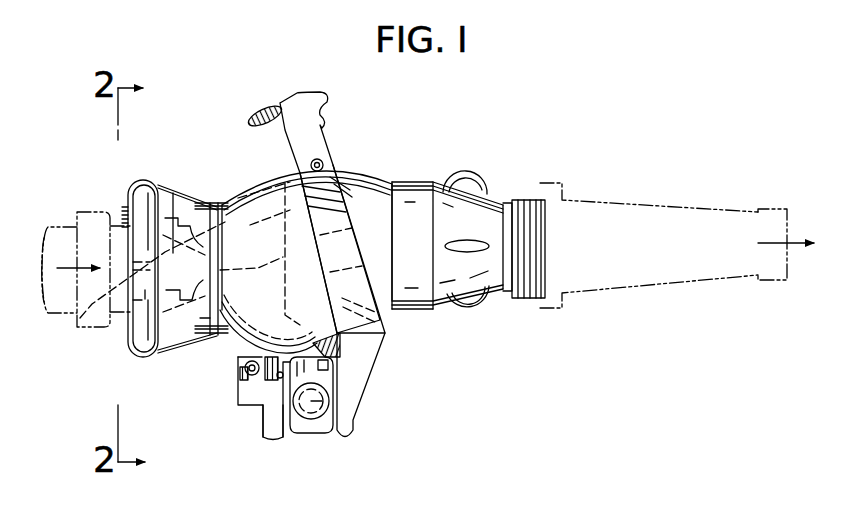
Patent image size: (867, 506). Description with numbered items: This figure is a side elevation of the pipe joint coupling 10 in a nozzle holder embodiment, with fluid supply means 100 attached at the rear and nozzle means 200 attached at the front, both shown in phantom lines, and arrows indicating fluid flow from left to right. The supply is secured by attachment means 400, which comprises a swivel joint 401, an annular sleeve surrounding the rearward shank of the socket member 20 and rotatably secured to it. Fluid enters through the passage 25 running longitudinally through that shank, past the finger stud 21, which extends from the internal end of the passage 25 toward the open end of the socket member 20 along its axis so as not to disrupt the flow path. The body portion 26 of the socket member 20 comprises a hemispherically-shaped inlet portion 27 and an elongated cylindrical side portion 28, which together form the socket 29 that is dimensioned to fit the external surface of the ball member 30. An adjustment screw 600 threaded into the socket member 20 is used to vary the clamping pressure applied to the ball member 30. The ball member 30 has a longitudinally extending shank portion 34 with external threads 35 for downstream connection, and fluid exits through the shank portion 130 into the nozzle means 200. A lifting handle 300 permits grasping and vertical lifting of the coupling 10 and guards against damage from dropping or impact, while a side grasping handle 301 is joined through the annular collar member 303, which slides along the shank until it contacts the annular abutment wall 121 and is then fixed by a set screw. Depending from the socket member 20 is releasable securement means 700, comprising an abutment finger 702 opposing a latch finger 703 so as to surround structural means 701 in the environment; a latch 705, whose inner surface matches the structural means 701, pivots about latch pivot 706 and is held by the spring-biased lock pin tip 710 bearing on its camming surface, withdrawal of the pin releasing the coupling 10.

The pipe joint coupling 10 is at (375, 158).
The socket member 20 is at (248, 180).
The finger stud 21 is at (115, 243).
The fluid passage 25 is at (78, 325).
The body portion 26 is at (274, 101).
The hemispherically-shaped inlet portion 27 is at (237, 196).
The side portion 28 is at (380, 347).
The socket 29 is at (348, 158).
The ball member 30 is at (385, 173).
The shank portion 34 is at (542, 188).
The external threads 35 is at (548, 283).
The fluid supply means 100 is at (56, 226).
The annular abutment wall 121 is at (205, 330).
The shank portion 130 is at (510, 198).
The nozzle means 200 is at (713, 213).
The lifting handle 300 is at (300, 93).
The side grasping handle 301 is at (145, 180).
The annular collar member 303 is at (206, 203).
The attachment means 400 is at (118, 324).
The swivel joint 401 is at (122, 210).
The adjustment screw 600 is at (323, 160).
The releasable securement means 700 is at (252, 422).
The structural means 701 is at (337, 407).
The abutment finger 702 is at (356, 420).
The latch finger 703 is at (277, 436).
The latch 705 is at (306, 430).
The latch pivot 706 is at (278, 378).
The lock pin tip 710 is at (246, 372).